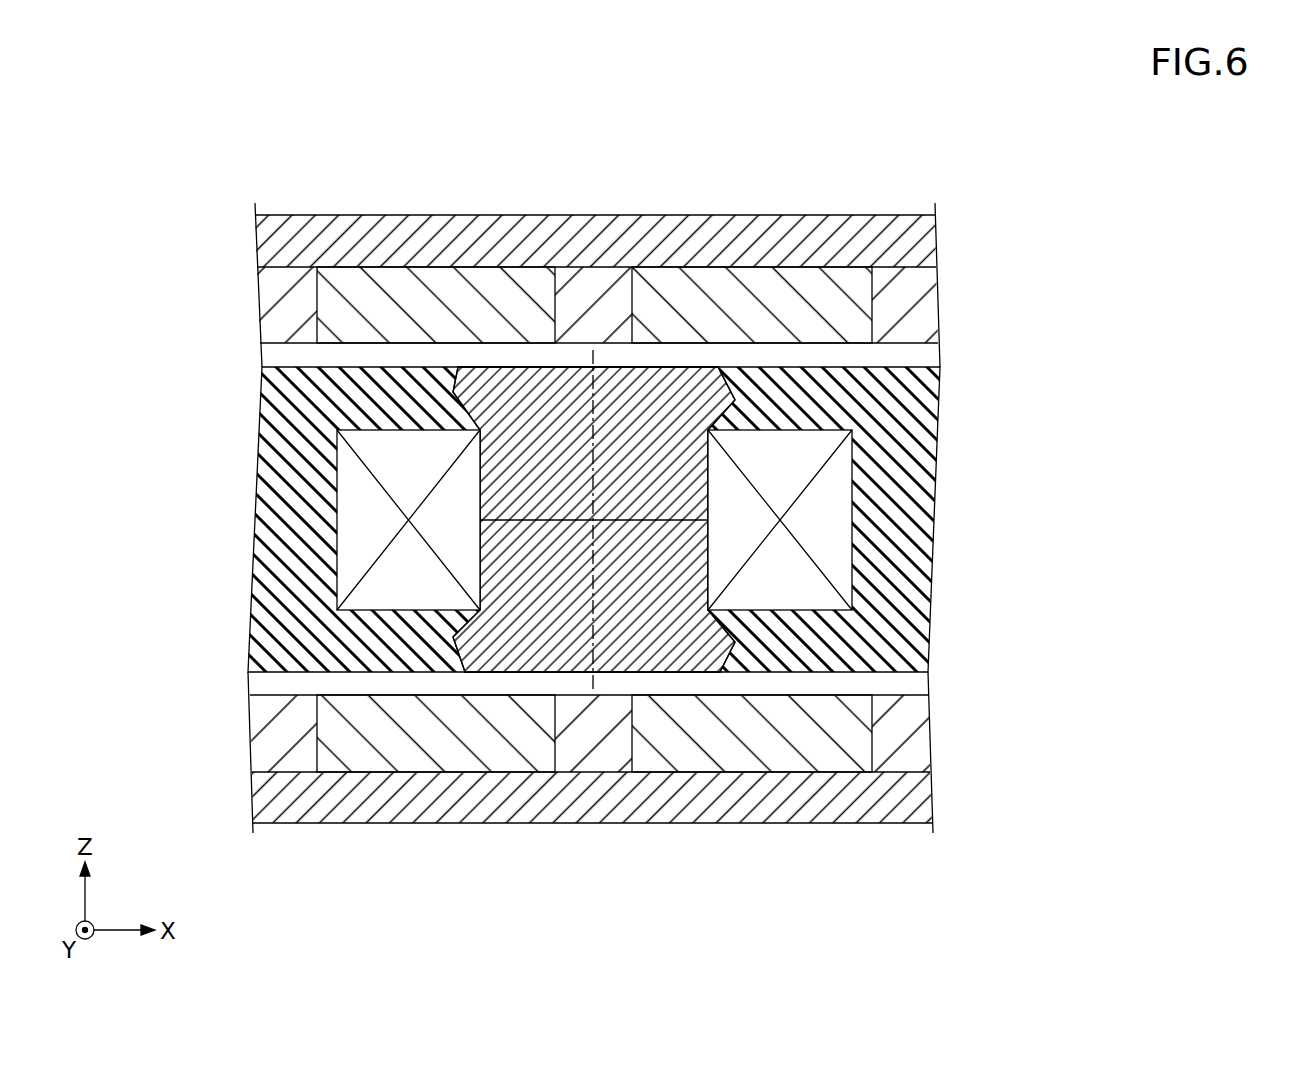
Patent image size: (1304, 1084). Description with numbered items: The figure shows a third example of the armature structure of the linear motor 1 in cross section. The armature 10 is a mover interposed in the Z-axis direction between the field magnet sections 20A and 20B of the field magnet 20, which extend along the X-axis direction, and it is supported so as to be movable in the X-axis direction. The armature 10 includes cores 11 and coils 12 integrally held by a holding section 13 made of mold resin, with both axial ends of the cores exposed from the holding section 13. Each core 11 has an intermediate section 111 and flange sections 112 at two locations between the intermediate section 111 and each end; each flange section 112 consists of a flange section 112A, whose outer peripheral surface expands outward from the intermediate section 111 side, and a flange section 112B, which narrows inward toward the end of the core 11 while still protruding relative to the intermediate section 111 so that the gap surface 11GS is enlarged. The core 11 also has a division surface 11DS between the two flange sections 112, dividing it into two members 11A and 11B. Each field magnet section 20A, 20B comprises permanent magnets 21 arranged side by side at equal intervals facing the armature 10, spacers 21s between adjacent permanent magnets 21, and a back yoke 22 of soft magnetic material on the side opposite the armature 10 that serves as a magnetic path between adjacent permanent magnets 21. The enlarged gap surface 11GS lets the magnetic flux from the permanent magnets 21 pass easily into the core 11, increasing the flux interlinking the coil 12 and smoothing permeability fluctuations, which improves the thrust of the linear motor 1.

The linear motor 1 is at (73, 120).
The armature 10 is at (280, 359).
The core 11 is at (100, 470).
The member 11A is at (500, 483).
The member 11B is at (500, 557).
The division surface 11DS is at (548, 510).
The gap surface 11GS is at (519, 353).
The coil 12 is at (718, 578).
The holding section 13 is at (392, 652).
The field magnet 20 is at (1181, 317).
The field magnet section 20A is at (975, 287).
The field magnet section 20B is at (975, 754).
The permanent magnet 21 is at (430, 278).
The spacer 21s is at (279, 278).
The back yoke 22 is at (833, 232).
The intermediate section 111 is at (697, 483).
The flange section 112 is at (1055, 352).
The flange section 112A is at (728, 414).
The flange section 112B is at (712, 380).